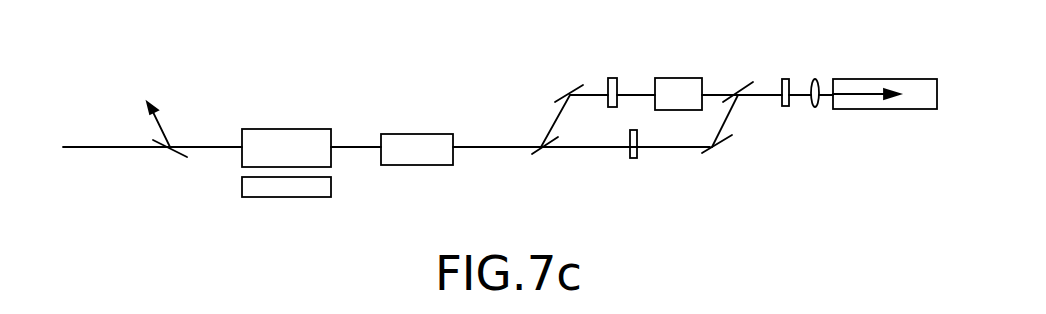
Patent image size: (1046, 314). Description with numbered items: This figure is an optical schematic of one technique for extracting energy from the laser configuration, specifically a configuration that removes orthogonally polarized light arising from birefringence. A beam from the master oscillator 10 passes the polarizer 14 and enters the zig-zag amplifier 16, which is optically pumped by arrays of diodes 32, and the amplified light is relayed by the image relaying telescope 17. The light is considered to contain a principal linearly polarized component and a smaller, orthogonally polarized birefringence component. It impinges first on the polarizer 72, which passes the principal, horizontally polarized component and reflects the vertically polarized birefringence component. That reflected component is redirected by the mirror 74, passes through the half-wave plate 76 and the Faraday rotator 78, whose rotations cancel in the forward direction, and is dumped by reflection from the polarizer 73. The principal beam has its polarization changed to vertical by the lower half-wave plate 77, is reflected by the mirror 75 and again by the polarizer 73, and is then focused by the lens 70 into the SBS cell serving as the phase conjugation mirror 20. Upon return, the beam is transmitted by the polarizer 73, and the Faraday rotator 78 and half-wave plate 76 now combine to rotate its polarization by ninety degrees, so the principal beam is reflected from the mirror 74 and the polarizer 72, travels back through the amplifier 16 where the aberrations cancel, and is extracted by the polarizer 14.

The polarizer 14 is at (170, 143).
The zig-zag amplifier 16 is at (331, 130).
The image relaying telescope 17 is at (440, 134).
The arrays of diodes 32 is at (331, 185).
The polarizer 72 is at (536, 154).
The mirror 74 is at (556, 102).
The half-wave plate 76 is at (613, 78).
The Faraday rotator 78 is at (683, 78).
The half-wave plate 77 is at (637, 158).
The mirror 75 is at (725, 135).
The polarizer 73 is at (742, 90).
The master oscillator 10 is at (788, 106).
The lens 70 is at (815, 106).
The phase conjugation mirror 20 is at (870, 110).